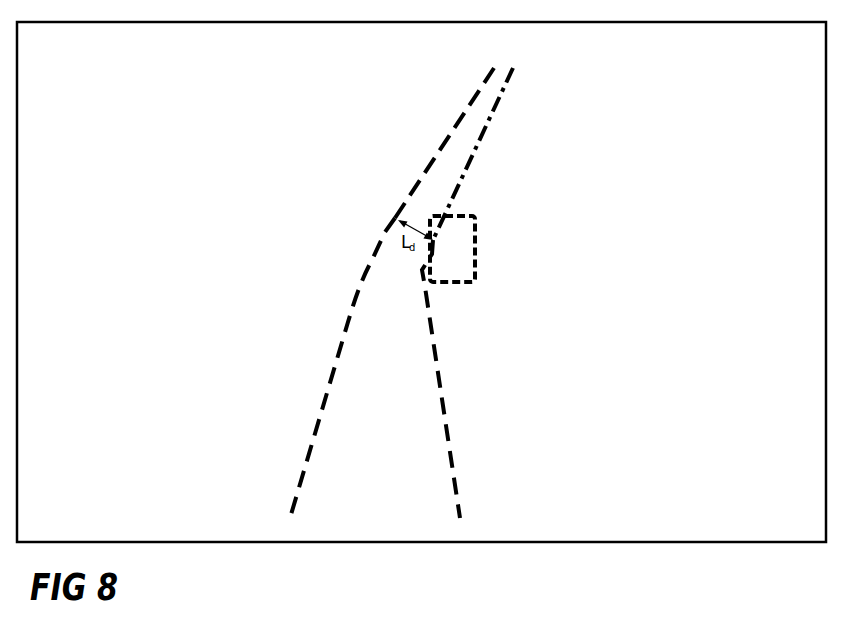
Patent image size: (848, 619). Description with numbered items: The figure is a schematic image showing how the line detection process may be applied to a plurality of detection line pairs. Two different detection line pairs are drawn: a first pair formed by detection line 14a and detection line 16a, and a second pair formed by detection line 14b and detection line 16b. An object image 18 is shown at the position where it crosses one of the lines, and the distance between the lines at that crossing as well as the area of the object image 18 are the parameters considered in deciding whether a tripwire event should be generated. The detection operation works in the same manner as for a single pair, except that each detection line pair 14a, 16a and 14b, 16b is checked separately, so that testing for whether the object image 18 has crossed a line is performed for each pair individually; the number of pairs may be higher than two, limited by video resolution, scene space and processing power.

The detection line 16a is at (443, 143).
The detection line 16b is at (327, 396).
The detection line 14a is at (482, 140).
The detection line 14b is at (442, 388).
The object image 18 is at (460, 243).